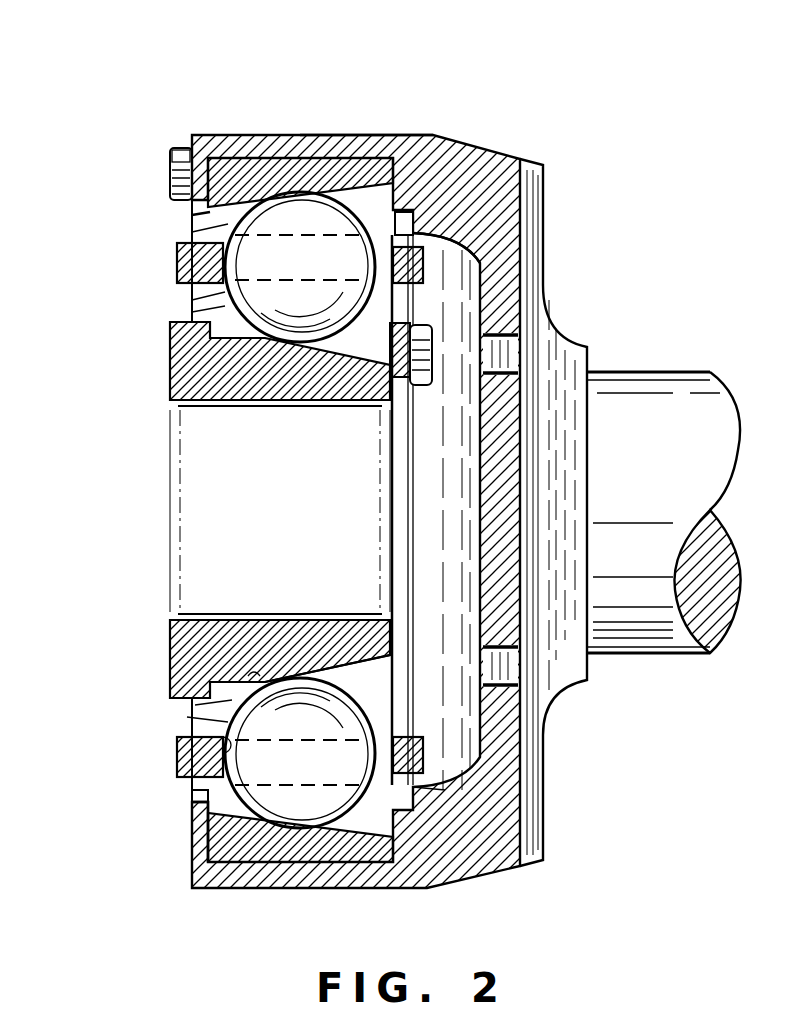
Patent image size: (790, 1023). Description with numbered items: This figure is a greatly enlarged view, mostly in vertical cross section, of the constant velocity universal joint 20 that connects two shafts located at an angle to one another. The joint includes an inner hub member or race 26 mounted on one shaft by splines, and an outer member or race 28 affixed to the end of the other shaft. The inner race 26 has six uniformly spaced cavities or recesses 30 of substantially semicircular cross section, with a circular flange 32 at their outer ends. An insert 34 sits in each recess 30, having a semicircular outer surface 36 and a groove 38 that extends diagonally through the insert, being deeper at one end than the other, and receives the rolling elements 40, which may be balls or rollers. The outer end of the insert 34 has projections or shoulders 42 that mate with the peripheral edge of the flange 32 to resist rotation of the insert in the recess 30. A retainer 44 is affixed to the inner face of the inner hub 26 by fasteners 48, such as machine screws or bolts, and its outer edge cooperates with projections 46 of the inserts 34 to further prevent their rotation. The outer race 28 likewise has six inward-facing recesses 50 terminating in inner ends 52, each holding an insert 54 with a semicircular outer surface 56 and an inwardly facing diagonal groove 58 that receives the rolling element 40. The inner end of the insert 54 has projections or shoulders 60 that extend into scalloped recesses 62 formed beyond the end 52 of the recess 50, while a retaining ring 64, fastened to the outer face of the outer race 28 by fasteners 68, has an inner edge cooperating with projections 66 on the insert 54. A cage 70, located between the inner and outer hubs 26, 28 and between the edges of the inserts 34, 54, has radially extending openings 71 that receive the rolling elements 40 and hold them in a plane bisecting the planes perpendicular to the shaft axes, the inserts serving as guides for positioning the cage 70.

The constant velocity universal joint 20 is at (291, 88).
The inner hub member or race 26 is at (155, 393).
The outer member or race 28 is at (176, 208).
The recesses 30 is at (238, 368).
The circular flange 32 is at (180, 707).
The insert 34 is at (175, 638).
The outer surface 36 is at (257, 637).
The groove 38 is at (285, 637).
The rolling elements 40 is at (315, 729).
The projections or shoulders 42 is at (412, 322).
The retainer 44 is at (410, 410).
The projections 46 is at (187, 310).
The fasteners 48 is at (431, 360).
The recesses 50 is at (300, 173).
The inner ends 52 is at (378, 135).
The insert 54 is at (177, 162).
The outer surface 56 is at (337, 135).
The groove 58 is at (200, 218).
The projections or shoulders 60 is at (418, 238).
The recesses 62 is at (453, 183).
The retaining ring 64 is at (190, 820).
The projections 66 is at (197, 233).
The fasteners 68 is at (178, 150).
The cage 70 is at (174, 268).
The radially-extending openings 71 is at (178, 735).